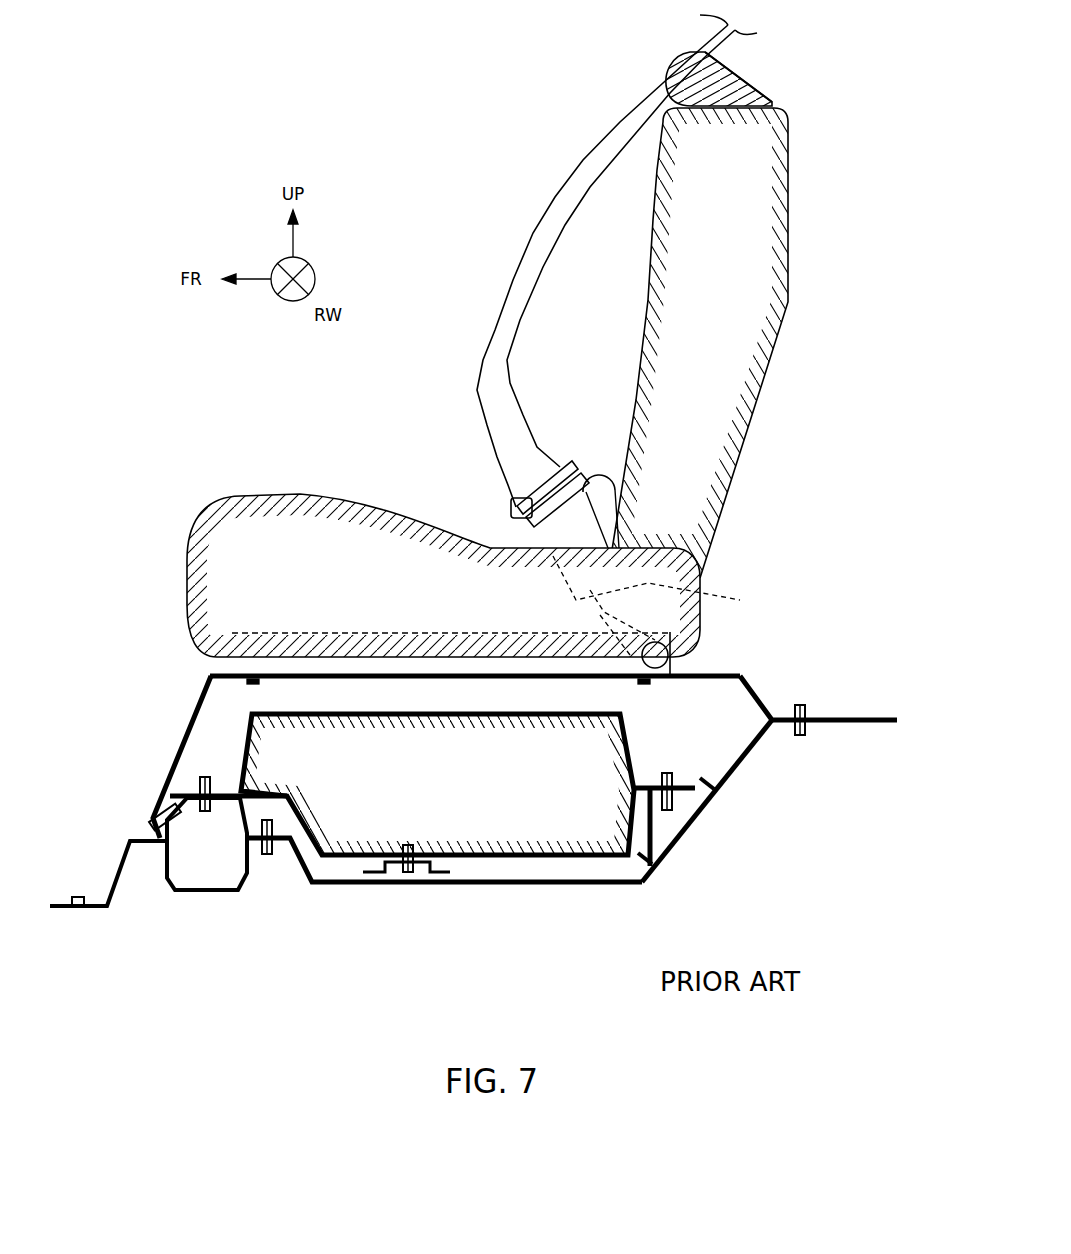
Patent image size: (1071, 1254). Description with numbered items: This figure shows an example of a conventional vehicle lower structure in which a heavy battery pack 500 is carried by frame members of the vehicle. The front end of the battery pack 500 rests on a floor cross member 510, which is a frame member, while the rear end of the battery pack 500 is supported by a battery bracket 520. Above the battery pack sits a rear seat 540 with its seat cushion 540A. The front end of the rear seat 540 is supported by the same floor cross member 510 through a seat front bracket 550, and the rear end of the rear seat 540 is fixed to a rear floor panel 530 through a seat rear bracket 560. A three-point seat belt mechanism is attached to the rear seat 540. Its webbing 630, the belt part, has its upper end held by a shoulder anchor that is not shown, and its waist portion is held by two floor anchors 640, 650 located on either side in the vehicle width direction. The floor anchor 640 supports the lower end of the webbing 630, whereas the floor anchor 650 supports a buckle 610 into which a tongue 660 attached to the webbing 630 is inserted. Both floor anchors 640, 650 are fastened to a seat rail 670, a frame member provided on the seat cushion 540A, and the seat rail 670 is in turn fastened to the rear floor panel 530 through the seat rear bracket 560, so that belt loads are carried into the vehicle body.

The battery pack 500 is at (631, 752).
The floor cross member 510 is at (203, 891).
The battery bracket 520 is at (655, 825).
The rear floor panel 530 is at (735, 775).
The rear seat 540 is at (750, 432).
The seat cushion 540A is at (200, 523).
The seat front bracket 550 is at (185, 750).
The seat rear bracket 560 is at (757, 681).
The buckle 610 is at (522, 541).
The webbing 630 is at (528, 238).
The floor anchor 640 is at (614, 484).
The floor anchor 650 is at (703, 589).
The tongue 660 is at (511, 504).
The seat rail 670 is at (676, 660).